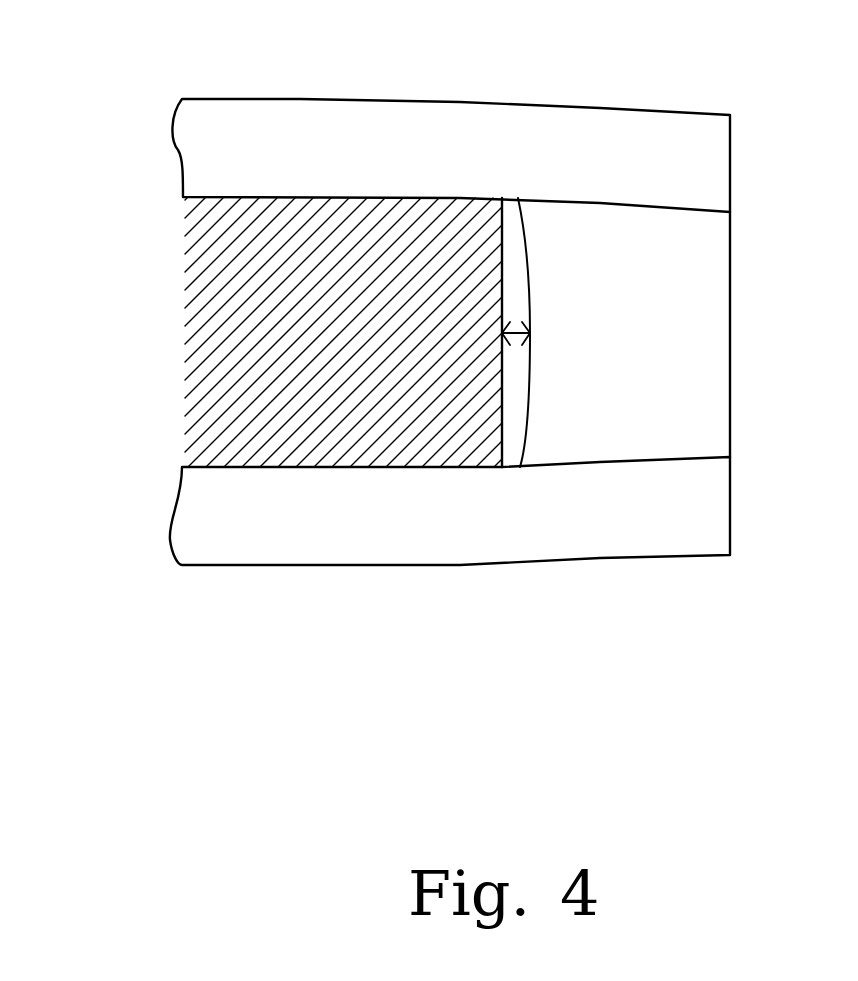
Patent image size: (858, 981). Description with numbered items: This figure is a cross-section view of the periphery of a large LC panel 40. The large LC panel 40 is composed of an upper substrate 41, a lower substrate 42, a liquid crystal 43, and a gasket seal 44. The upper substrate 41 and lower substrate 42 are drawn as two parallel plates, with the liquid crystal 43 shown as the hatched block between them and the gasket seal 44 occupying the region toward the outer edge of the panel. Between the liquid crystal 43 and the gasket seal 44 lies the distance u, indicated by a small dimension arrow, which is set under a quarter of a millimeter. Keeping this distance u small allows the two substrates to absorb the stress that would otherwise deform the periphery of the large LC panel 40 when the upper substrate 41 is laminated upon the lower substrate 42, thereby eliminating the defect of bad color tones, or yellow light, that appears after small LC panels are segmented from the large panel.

The large LC panel 40 is at (493, 713).
The upper substrate 41 is at (532, 127).
The lower substrate 42 is at (642, 525).
The liquid crystal 43 is at (213, 323).
The gasket seal 44 is at (687, 334).
The distance between liquid crystal and gasket seal u is at (511, 336).